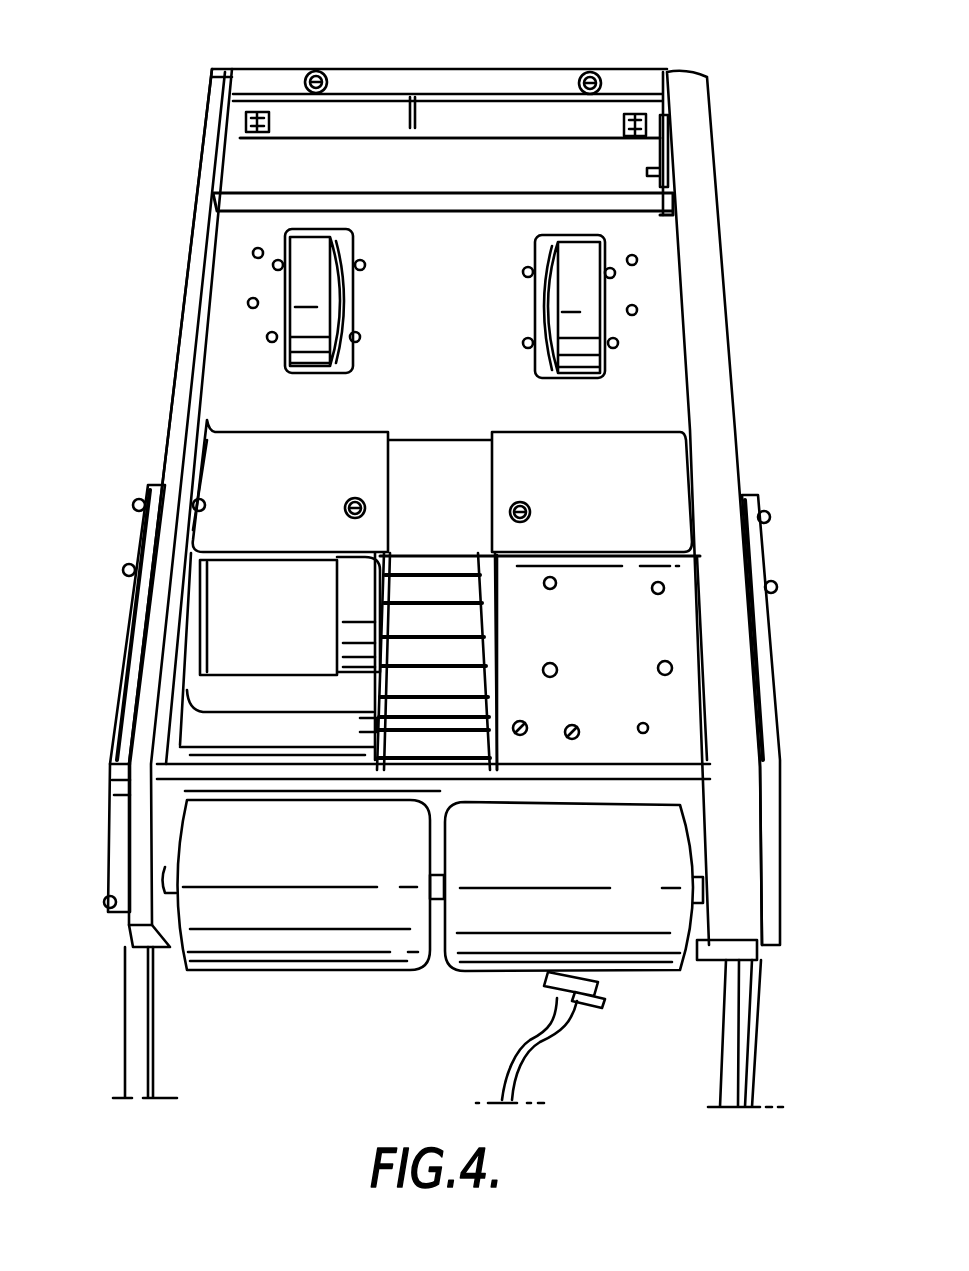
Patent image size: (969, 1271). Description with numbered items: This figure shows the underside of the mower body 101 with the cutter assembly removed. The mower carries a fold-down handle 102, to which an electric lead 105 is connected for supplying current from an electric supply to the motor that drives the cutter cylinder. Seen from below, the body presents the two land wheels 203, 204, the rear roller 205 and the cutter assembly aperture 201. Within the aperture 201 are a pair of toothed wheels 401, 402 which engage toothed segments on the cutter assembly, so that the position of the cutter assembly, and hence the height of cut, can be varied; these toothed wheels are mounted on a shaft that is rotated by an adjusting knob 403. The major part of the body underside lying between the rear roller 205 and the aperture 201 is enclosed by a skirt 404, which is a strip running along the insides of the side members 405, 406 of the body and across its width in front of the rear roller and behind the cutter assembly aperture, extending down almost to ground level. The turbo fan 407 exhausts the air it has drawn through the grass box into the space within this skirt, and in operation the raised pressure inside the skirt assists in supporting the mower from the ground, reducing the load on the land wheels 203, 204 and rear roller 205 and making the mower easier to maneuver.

The body 101 is at (693, 180).
The fold-down handle 102 is at (126, 678).
The electric lead 105 is at (553, 1028).
The cutter assembly aperture 201 is at (246, 148).
The land wheel 203 is at (578, 310).
The land wheel 204 is at (307, 288).
The rear roller 205 is at (673, 840).
The toothed wheel 401 is at (262, 118).
The toothed wheel 402 is at (636, 114).
The adjusting knob 403 is at (713, 110).
The skirt 404 is at (203, 390).
The side member 405 is at (195, 343).
The side member 406 is at (717, 420).
The turbo fan 407 is at (480, 655).